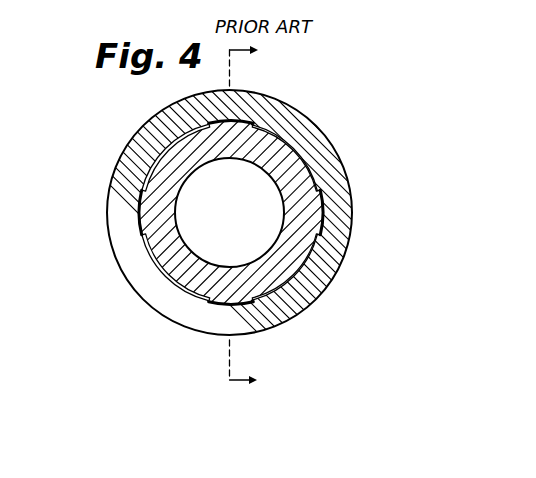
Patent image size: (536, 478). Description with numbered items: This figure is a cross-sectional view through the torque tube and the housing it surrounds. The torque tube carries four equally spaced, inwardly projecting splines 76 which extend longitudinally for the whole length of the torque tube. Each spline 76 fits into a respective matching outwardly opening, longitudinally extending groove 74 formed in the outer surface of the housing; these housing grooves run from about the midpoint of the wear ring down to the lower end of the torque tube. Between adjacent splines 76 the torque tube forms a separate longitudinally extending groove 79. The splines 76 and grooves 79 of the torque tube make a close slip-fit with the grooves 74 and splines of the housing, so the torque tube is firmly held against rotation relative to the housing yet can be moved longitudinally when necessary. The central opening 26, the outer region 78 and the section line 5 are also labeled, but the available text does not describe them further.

The bore 26 is at (178, 207).
The groove 74 is at (140, 200).
The spline 76 is at (138, 232).
The outer sleeve 78 is at (157, 140).
The groove 79 is at (180, 124).
The section line 5- 5 is at (252, 215).